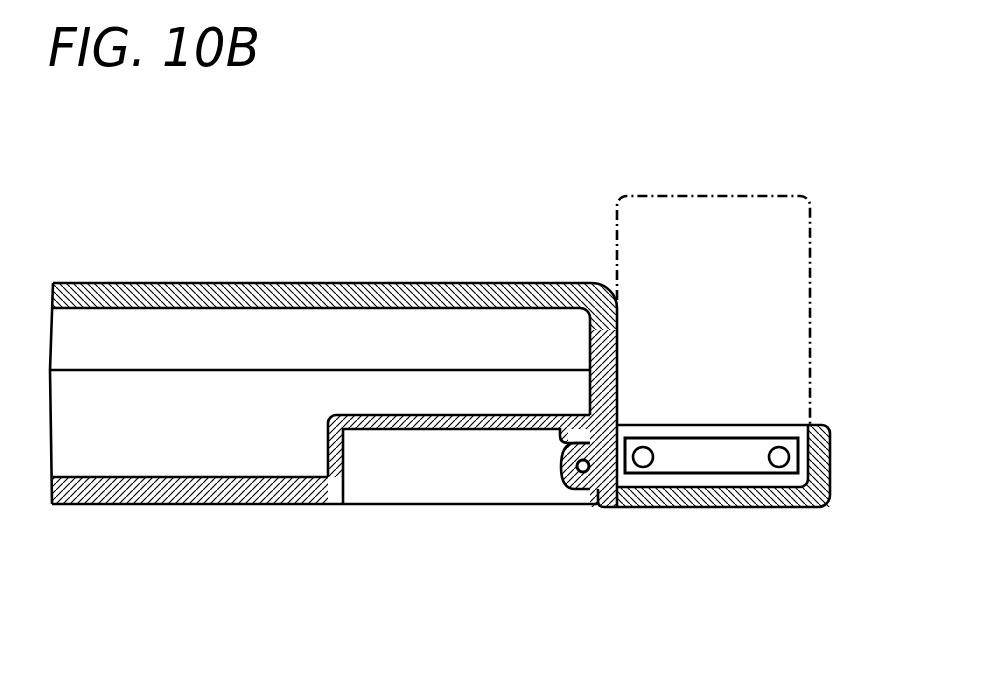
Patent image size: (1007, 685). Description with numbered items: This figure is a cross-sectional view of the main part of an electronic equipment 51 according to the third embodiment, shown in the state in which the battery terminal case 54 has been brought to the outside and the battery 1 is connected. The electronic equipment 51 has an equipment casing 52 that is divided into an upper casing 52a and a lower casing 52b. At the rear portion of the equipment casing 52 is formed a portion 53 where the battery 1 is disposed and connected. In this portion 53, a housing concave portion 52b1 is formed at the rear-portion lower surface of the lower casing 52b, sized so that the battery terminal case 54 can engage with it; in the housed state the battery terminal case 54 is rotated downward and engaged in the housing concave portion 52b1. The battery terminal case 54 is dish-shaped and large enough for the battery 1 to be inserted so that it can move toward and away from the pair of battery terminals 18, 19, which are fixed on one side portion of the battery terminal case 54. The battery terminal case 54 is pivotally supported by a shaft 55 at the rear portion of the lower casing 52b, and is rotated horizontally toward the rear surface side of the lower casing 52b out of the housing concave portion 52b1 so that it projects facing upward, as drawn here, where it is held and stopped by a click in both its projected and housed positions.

The battery 1 is at (722, 196).
The electronic equipment 51 is at (452, 235).
The equipment casing 52 is at (153, 283).
The upper casing 52a is at (263, 288).
The lower casing 52b is at (217, 498).
The housing concave portion 52b1 is at (355, 450).
The portion where the battery is disposed and connected 53 is at (752, 390).
The battery terminal case 54 is at (731, 494).
The shaft 55 is at (580, 472).
The battery terminal 18 is at (780, 464).
The battery terminal 19 is at (644, 464).